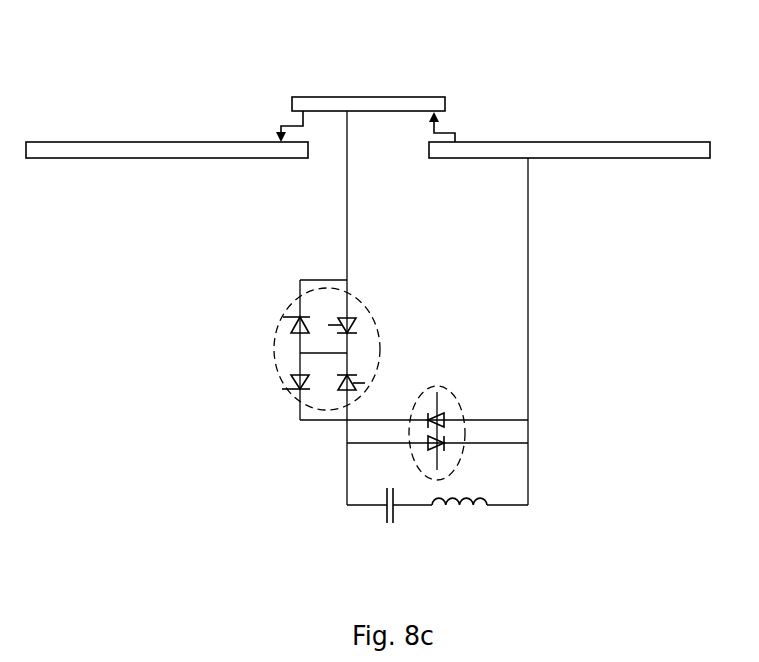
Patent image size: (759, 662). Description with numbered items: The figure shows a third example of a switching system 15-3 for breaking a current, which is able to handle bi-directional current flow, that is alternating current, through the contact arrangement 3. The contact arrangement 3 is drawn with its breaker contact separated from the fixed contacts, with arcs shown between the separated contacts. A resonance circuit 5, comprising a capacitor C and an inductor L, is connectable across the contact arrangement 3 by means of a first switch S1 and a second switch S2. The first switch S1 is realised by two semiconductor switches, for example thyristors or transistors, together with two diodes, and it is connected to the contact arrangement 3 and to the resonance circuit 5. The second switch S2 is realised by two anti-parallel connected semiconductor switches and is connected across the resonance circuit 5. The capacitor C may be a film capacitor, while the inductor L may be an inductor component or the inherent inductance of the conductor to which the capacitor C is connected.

The contact arrangement 3 is at (299, 80).
The switching system 15-3 is at (560, 63).
The resonance circuit 5 is at (437, 531).
The first switch S1 is at (292, 306).
The second switch S2 is at (455, 407).
The capacitor C is at (389, 506).
The inductor L is at (451, 529).